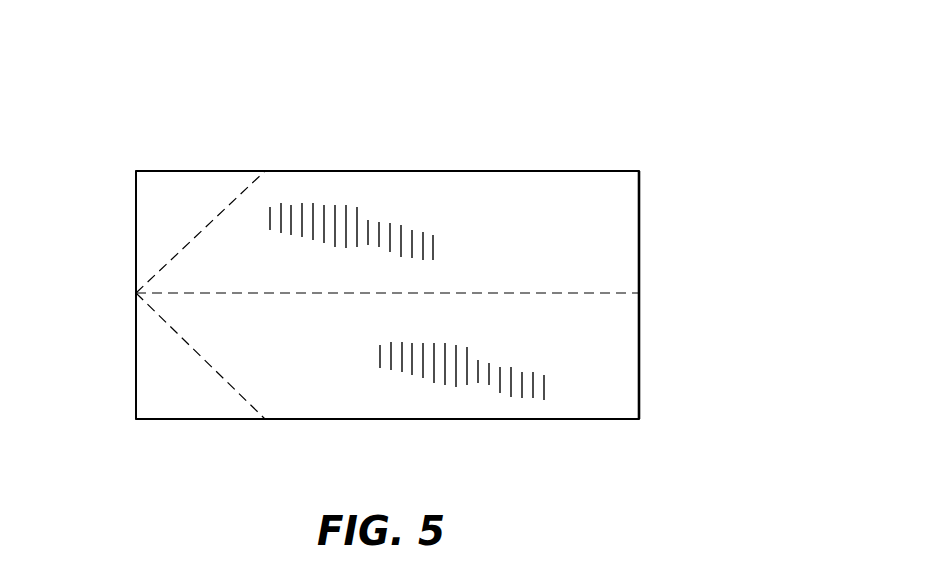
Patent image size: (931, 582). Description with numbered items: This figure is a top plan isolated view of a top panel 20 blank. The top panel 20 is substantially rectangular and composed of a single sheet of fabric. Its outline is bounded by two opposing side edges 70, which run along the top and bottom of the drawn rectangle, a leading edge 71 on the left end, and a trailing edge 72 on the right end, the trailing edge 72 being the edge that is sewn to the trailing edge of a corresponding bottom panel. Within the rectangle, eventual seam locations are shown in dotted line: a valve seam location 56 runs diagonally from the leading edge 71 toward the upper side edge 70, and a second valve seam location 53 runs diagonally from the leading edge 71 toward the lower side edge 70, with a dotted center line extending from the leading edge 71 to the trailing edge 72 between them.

The top panel 20 is at (597, 75).
The side edge 70 is at (378, 170).
The leading edge 71 is at (136, 211).
The trailing edge 72 is at (639, 199).
The seam location 56 is at (212, 222).
The valve seam location 53 is at (208, 367).